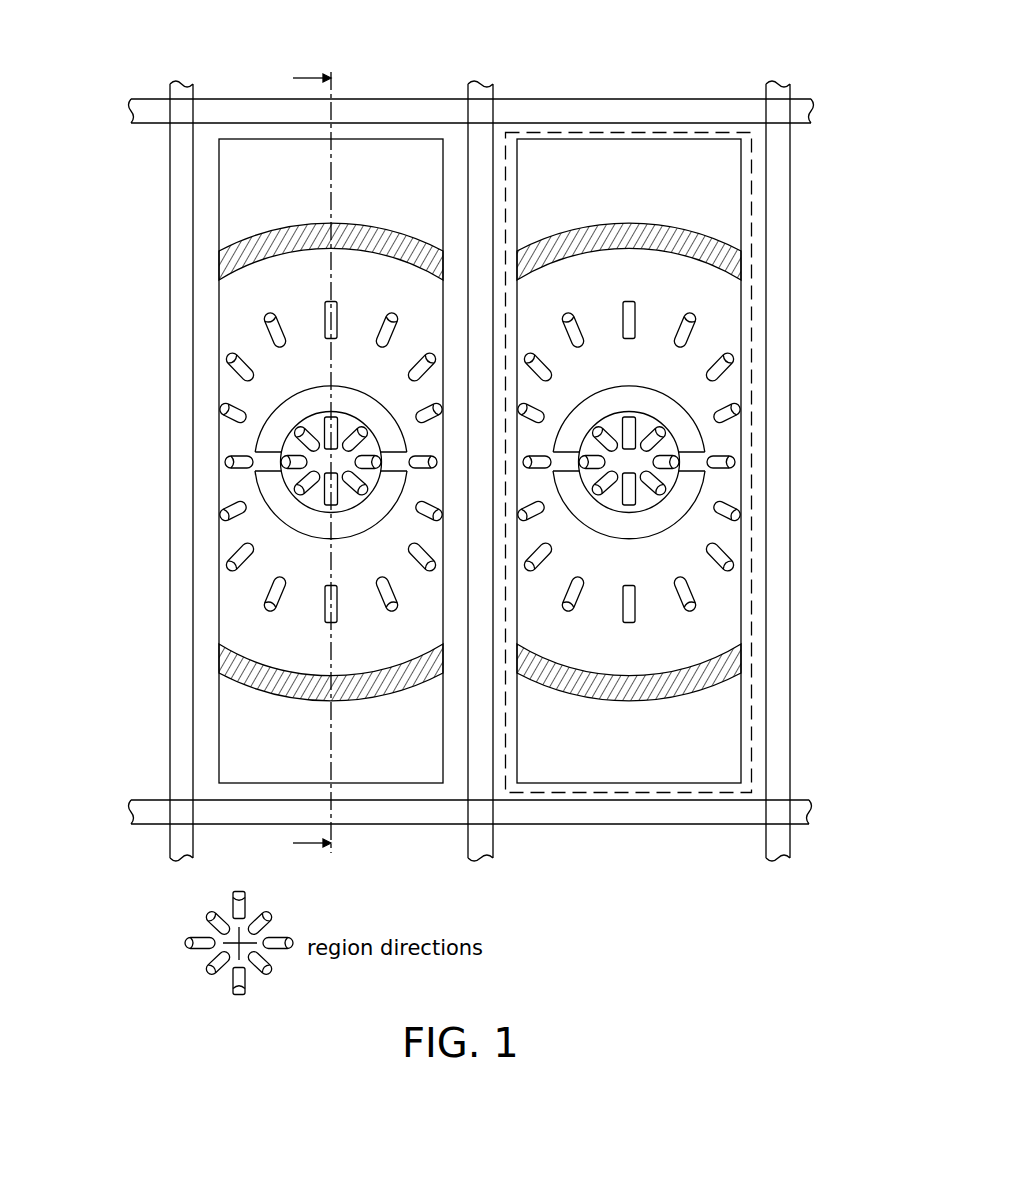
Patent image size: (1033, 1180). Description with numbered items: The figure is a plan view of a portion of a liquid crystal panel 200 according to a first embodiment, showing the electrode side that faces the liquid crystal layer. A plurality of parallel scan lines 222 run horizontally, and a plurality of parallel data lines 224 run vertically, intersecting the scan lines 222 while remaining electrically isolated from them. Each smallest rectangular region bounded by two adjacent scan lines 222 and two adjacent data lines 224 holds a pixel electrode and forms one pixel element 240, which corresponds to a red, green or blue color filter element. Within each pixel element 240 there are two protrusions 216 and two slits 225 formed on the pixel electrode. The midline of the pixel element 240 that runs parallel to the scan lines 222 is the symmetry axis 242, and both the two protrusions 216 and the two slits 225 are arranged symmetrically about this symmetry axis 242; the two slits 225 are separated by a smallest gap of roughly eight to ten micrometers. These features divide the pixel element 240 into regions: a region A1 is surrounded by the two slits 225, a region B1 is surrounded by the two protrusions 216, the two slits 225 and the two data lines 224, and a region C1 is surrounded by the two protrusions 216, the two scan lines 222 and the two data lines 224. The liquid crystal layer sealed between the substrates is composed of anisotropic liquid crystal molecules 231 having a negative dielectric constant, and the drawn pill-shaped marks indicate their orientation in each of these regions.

The liquid crystal panel 200 is at (512, 42).
The scan lines 222 is at (800, 110).
The data lines 224 is at (777, 92).
The pixel element 240 is at (752, 133).
The region C1 is at (718, 220).
The protrusions 216 is at (707, 248).
The region B1 is at (707, 305).
The liquid crystal molecules 231 is at (690, 333).
The slits 225 is at (673, 417).
The region A1 is at (667, 448).
The symmetry axis 242 is at (690, 460).